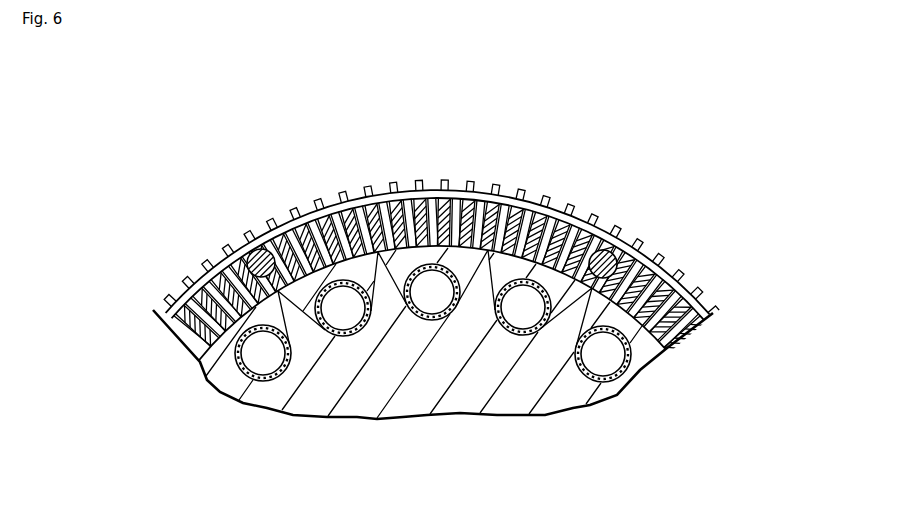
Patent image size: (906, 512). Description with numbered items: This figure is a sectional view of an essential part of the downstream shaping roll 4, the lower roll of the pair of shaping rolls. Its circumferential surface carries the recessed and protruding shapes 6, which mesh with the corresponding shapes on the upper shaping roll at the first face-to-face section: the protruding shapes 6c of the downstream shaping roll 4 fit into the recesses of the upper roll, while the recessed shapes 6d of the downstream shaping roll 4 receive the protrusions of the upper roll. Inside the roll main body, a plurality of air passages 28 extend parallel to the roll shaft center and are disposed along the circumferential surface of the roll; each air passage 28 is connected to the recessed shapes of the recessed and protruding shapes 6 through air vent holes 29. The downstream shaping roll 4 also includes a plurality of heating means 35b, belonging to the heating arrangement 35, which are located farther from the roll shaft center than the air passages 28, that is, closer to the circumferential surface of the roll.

The downstream shaping roll 4 is at (705, 262).
The recessed and protruding shapes 6 is at (437, 230).
The protruding shapes 6c is at (293, 208).
The recessed shapes 6d is at (304, 210).
The air passages 28 is at (453, 278).
The air vent holes 29 is at (398, 213).
The fastening portion 35 is at (405, 211).
The heating means 35b is at (240, 237).